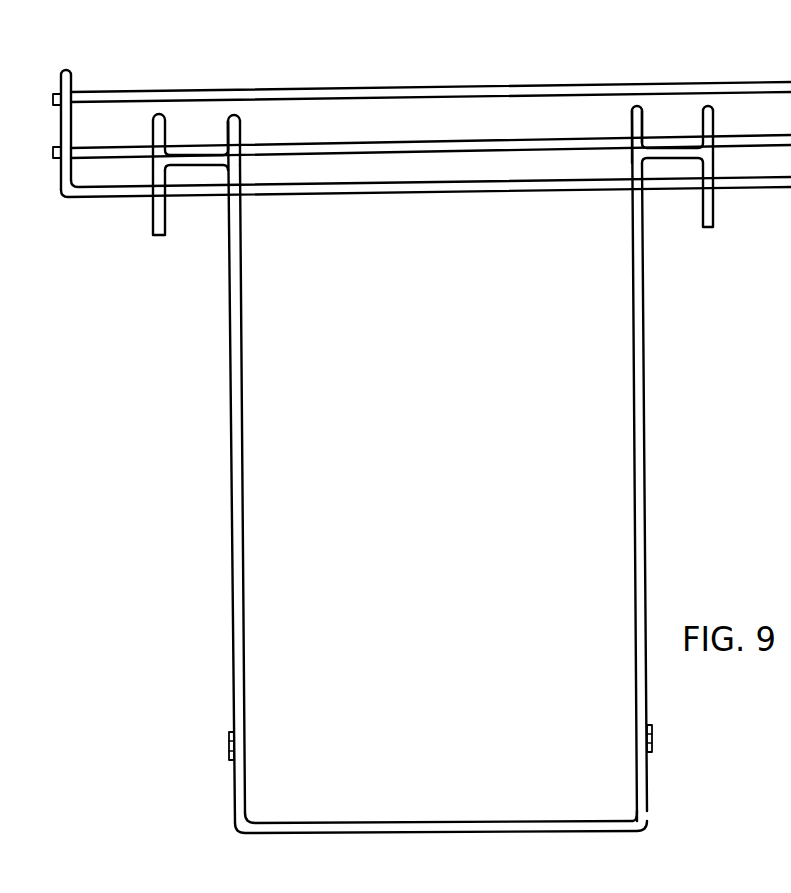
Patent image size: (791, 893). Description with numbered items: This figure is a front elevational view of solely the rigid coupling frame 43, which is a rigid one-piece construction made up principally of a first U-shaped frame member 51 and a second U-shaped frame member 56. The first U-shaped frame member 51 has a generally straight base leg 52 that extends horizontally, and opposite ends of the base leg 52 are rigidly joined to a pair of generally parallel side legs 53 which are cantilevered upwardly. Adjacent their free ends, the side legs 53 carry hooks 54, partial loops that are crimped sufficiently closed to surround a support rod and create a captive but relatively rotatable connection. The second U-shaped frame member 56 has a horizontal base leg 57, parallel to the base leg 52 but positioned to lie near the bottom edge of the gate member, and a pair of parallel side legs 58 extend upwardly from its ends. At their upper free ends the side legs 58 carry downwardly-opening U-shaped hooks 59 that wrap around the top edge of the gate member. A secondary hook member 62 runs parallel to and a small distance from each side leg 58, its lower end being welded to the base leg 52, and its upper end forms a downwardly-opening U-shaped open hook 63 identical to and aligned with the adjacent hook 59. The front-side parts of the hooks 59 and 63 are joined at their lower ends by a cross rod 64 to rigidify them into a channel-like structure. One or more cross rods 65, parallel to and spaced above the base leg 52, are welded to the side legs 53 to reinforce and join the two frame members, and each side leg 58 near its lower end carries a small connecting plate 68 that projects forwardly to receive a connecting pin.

The rigid coupling frame 43 is at (198, 413).
The first U-shaped frame member 51 is at (432, 193).
The base leg 52 is at (539, 188).
The side legs 53 is at (61, 130).
The hooks 54 is at (60, 76).
The second U-shaped frame member 56 is at (244, 427).
The base leg 57 is at (436, 822).
The side legs 58 is at (236, 591).
The U-shaped hooks 59 is at (241, 124).
The secondary hook member 62 is at (162, 170).
The U-shaped open hook 63 is at (153, 130).
The cross rod 64 is at (198, 163).
The cross rods 65 is at (390, 143).
The connecting plate 68 is at (230, 740).